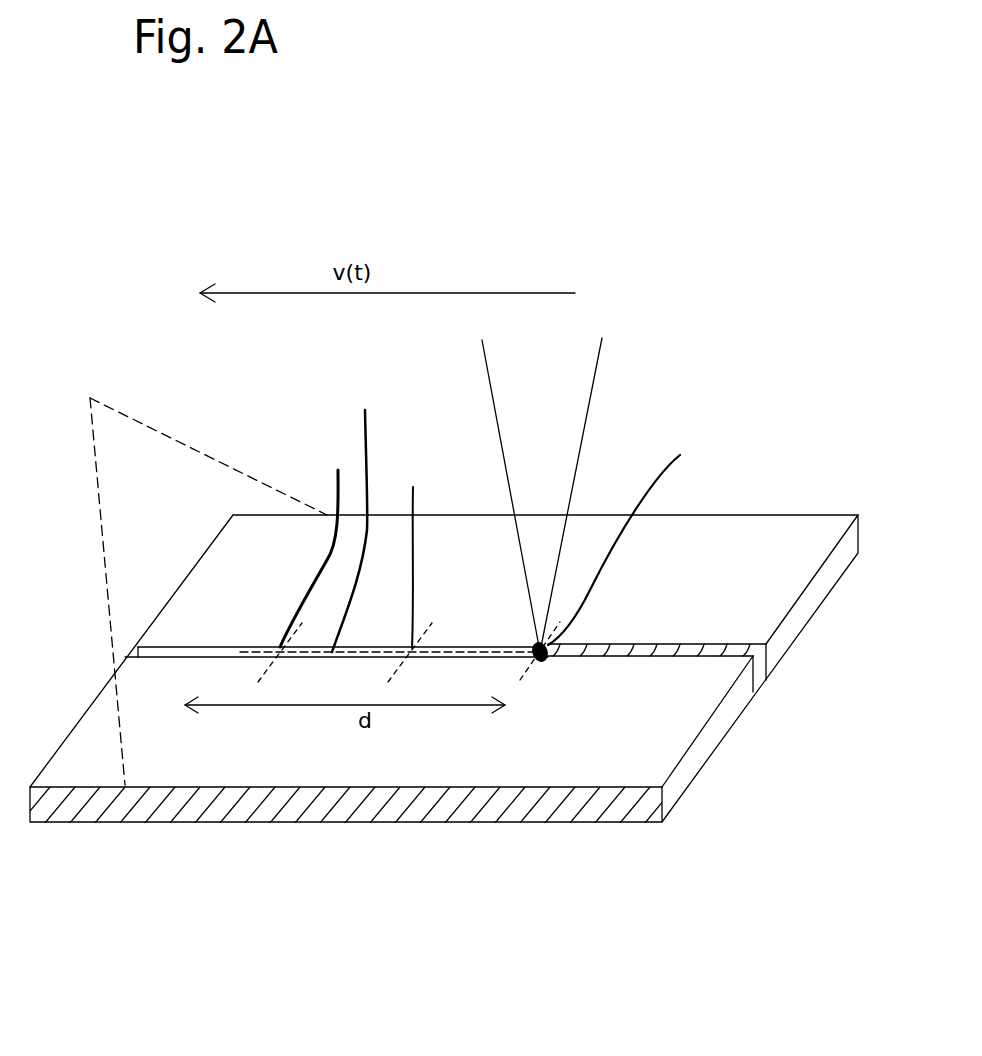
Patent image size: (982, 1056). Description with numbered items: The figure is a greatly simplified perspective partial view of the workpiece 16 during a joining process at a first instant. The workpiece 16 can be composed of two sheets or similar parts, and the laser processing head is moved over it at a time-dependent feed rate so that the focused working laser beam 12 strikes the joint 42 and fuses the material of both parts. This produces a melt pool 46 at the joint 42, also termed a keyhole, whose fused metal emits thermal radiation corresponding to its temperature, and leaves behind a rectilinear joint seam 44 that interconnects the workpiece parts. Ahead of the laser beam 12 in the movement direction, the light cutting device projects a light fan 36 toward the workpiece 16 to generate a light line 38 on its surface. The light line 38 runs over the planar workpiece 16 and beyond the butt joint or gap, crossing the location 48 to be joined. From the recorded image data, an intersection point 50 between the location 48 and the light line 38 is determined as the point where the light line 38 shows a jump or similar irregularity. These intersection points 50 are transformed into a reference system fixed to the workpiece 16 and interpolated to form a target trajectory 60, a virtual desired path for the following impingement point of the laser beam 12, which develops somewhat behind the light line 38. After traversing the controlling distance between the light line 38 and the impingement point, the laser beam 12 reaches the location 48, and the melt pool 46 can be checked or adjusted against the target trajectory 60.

The working laser beam 12 is at (600, 358).
The workpiece 16 is at (133, 810).
The light fan 36 is at (195, 452).
The light line 38 is at (147, 757).
The joint 42 is at (545, 660).
The joint seam 44 is at (688, 650).
The melt pool 46 is at (637, 535).
The location to be joined 48 is at (232, 647).
The intersection point 50 is at (361, 540).
The target trajectory 60 is at (354, 508).